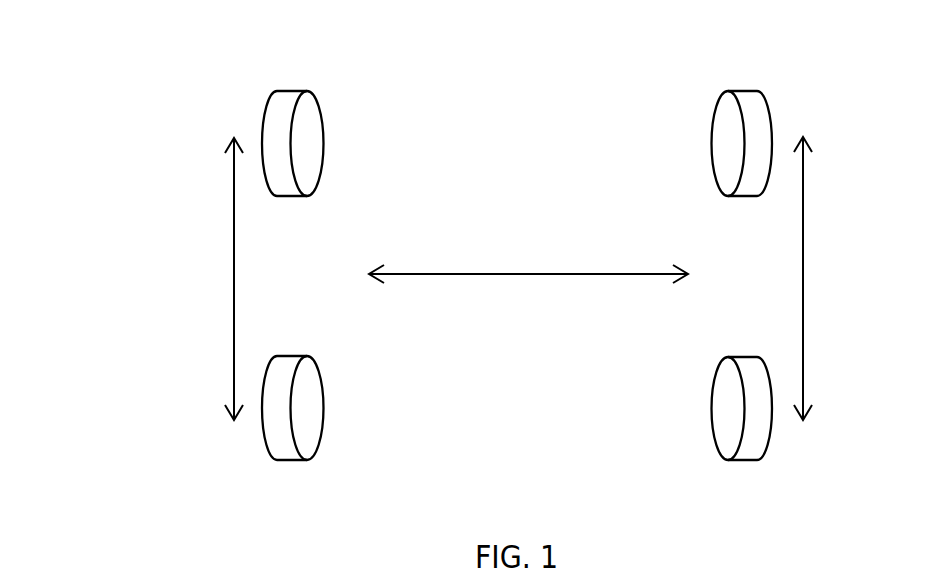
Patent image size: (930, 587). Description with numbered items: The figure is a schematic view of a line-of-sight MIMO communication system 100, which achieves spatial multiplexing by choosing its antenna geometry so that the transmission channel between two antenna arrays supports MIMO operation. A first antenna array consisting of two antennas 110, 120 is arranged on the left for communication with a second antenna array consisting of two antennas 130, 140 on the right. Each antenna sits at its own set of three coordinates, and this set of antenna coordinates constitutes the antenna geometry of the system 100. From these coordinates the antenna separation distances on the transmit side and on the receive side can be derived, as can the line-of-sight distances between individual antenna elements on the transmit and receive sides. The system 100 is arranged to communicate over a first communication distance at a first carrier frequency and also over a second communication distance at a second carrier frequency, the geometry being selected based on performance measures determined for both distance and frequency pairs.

The MIMO communication system 100 is at (80, 42).
The antenna 110 is at (288, 91).
The antenna 120 is at (292, 461).
The antenna 130 is at (745, 91).
The antenna 140 is at (738, 461).